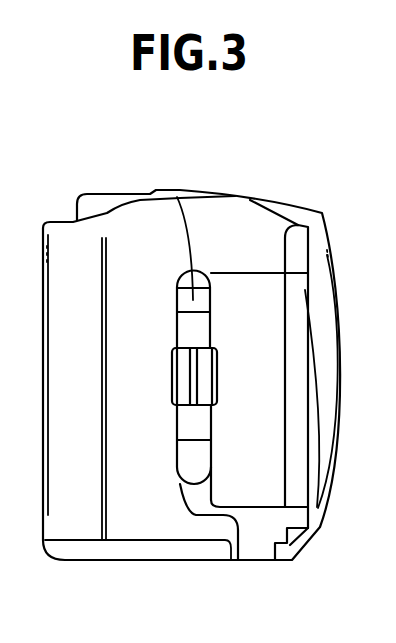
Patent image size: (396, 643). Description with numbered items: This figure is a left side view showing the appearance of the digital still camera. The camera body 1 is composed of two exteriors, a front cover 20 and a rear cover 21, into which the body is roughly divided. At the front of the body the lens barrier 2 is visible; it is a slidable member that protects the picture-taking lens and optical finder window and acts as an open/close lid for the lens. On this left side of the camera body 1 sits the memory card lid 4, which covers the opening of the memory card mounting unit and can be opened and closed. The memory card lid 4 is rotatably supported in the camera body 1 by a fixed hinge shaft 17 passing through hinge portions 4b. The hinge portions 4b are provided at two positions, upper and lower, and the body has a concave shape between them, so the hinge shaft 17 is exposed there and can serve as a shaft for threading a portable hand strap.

The body 1 is at (235, 191).
The lens barrier 2 is at (318, 233).
The memory card lid 4 is at (255, 485).
The hinge portions 4b is at (177, 270).
The hinge shaft 17 is at (188, 382).
The front cover 20 is at (255, 228).
The rear cover 21 is at (64, 248).